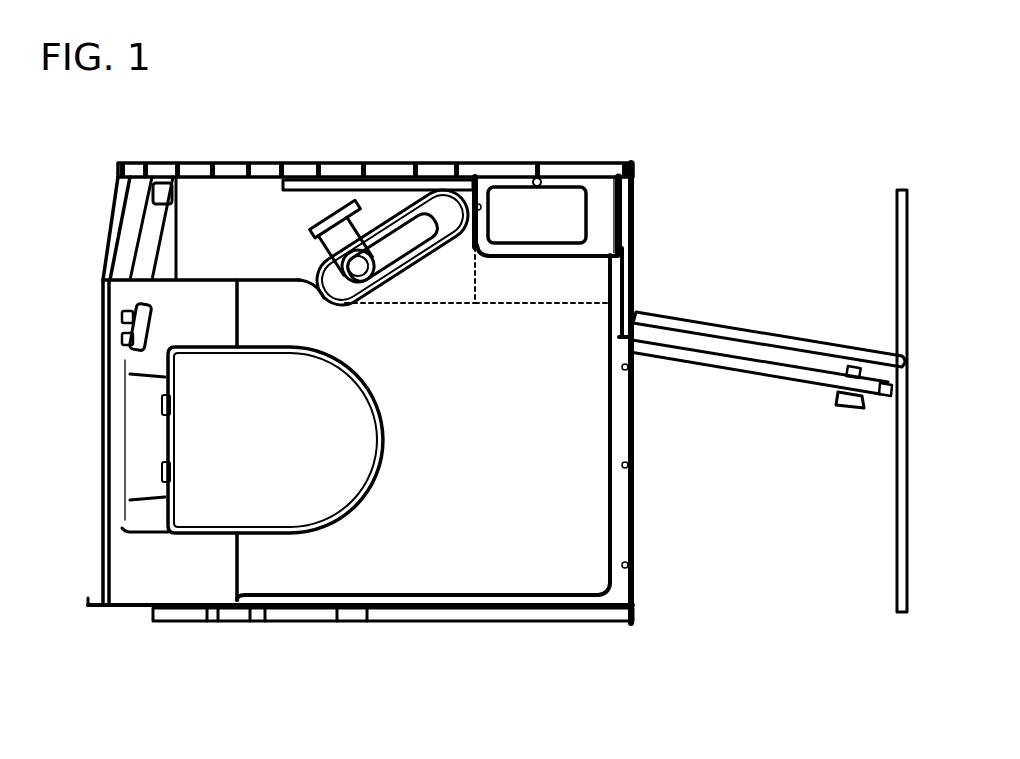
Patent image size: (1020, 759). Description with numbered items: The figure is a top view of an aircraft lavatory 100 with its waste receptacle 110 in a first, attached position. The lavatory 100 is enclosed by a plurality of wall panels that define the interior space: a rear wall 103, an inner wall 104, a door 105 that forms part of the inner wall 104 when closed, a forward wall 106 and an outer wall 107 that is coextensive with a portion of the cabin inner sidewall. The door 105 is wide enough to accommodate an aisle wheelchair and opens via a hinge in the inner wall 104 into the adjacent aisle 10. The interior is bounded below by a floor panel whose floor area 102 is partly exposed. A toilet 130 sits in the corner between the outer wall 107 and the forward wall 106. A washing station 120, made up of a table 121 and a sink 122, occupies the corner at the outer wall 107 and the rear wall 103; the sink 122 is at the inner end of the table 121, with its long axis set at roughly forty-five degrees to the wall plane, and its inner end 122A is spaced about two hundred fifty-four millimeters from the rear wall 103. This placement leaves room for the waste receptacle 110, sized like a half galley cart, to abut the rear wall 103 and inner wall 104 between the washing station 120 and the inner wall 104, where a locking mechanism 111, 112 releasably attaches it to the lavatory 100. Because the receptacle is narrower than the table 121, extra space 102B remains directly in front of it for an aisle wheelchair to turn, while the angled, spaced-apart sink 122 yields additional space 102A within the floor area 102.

The aisle 10 is at (781, 278).
The aircraft lavatory 100 is at (683, 657).
The floor area 102 is at (487, 479).
The additional space 102A is at (443, 293).
The extra space 102B is at (547, 293).
The rear wall 103 is at (306, 163).
The inner wall 104 is at (627, 203).
The door 105 is at (723, 368).
The forward wall 106 is at (325, 622).
The outer wall 107 is at (114, 210).
The waste receptacle 110 is at (600, 190).
The locking mechanism 111 is at (536, 180).
The locking mechanism 112 is at (477, 198).
The washing station 120 is at (198, 207).
The table 121 is at (280, 239).
The sink 122 is at (403, 243).
The inner end of sink 122A is at (350, 303).
The toilet 130 is at (328, 473).